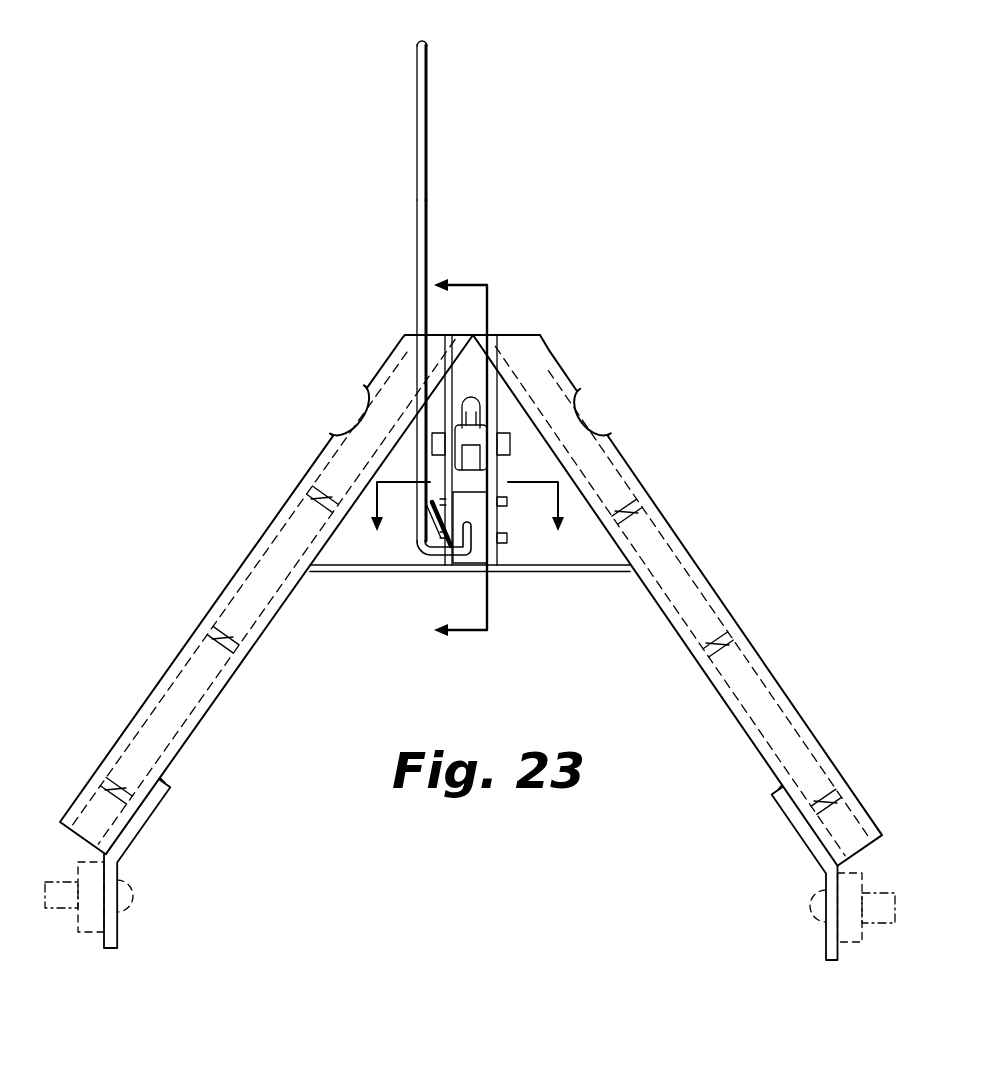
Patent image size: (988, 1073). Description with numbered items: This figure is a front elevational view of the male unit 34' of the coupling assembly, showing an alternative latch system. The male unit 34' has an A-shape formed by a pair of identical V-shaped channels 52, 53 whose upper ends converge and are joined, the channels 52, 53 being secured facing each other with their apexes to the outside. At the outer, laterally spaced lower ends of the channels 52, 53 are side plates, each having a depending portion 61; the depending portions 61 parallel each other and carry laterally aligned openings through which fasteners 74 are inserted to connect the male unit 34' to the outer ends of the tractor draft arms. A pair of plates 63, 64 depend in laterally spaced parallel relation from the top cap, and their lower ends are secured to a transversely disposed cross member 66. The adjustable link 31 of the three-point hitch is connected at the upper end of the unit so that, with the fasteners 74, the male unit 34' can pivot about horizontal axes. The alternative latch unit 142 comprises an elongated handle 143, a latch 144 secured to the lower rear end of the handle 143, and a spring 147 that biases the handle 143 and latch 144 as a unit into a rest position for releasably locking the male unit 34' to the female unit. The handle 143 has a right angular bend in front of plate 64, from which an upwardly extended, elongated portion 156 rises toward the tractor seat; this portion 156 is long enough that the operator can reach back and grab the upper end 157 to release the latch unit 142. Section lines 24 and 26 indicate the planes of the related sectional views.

The upper end 157 is at (511, 32).
The upwardly extended, elongated portion 156 is at (416, 97).
The elongated handle 143 is at (416, 233).
The section line 24- 24 is at (466, 459).
The adjustable link 31 is at (482, 388).
The plate 63 is at (443, 388).
The plate 64 is at (497, 398).
The male unit 34' is at (588, 396).
The section line 26- 26 is at (467, 522).
The V-shaped channel 52 is at (237, 597).
The V-shaped channel 53 is at (698, 602).
The cross member 66 is at (330, 578).
The latch unit 142 is at (399, 555).
The spring 147 is at (428, 567).
The latch 144 is at (455, 505).
The depending portion 61 is at (118, 938).
The fastener 74 is at (93, 910).